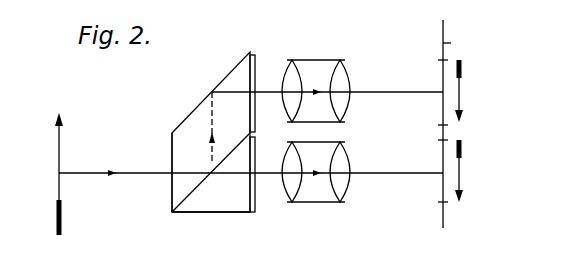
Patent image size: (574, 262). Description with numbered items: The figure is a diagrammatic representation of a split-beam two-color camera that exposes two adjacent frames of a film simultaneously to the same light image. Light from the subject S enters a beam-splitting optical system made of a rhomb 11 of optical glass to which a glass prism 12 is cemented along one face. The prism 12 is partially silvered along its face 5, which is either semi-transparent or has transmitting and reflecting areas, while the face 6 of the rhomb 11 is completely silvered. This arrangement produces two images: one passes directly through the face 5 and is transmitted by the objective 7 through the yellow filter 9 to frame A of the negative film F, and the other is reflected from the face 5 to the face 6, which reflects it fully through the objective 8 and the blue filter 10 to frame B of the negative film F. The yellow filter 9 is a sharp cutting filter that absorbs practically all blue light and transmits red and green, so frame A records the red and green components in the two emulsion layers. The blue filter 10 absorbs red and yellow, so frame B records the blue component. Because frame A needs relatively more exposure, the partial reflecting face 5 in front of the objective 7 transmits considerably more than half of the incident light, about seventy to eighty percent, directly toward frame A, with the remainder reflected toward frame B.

The subject S is at (58, 165).
The partially silvered face 5 is at (190, 201).
The completely silvered face 6 is at (196, 108).
The objective 7 is at (333, 203).
The objective 8 is at (327, 60).
The yellow filter 9 is at (250, 240).
The blue filter 10 is at (256, 57).
The rhomb 11 is at (183, 143).
The glass prism 12 is at (208, 203).
The negative film F is at (452, 124).
The frame A is at (465, 171).
The frame B is at (466, 91).